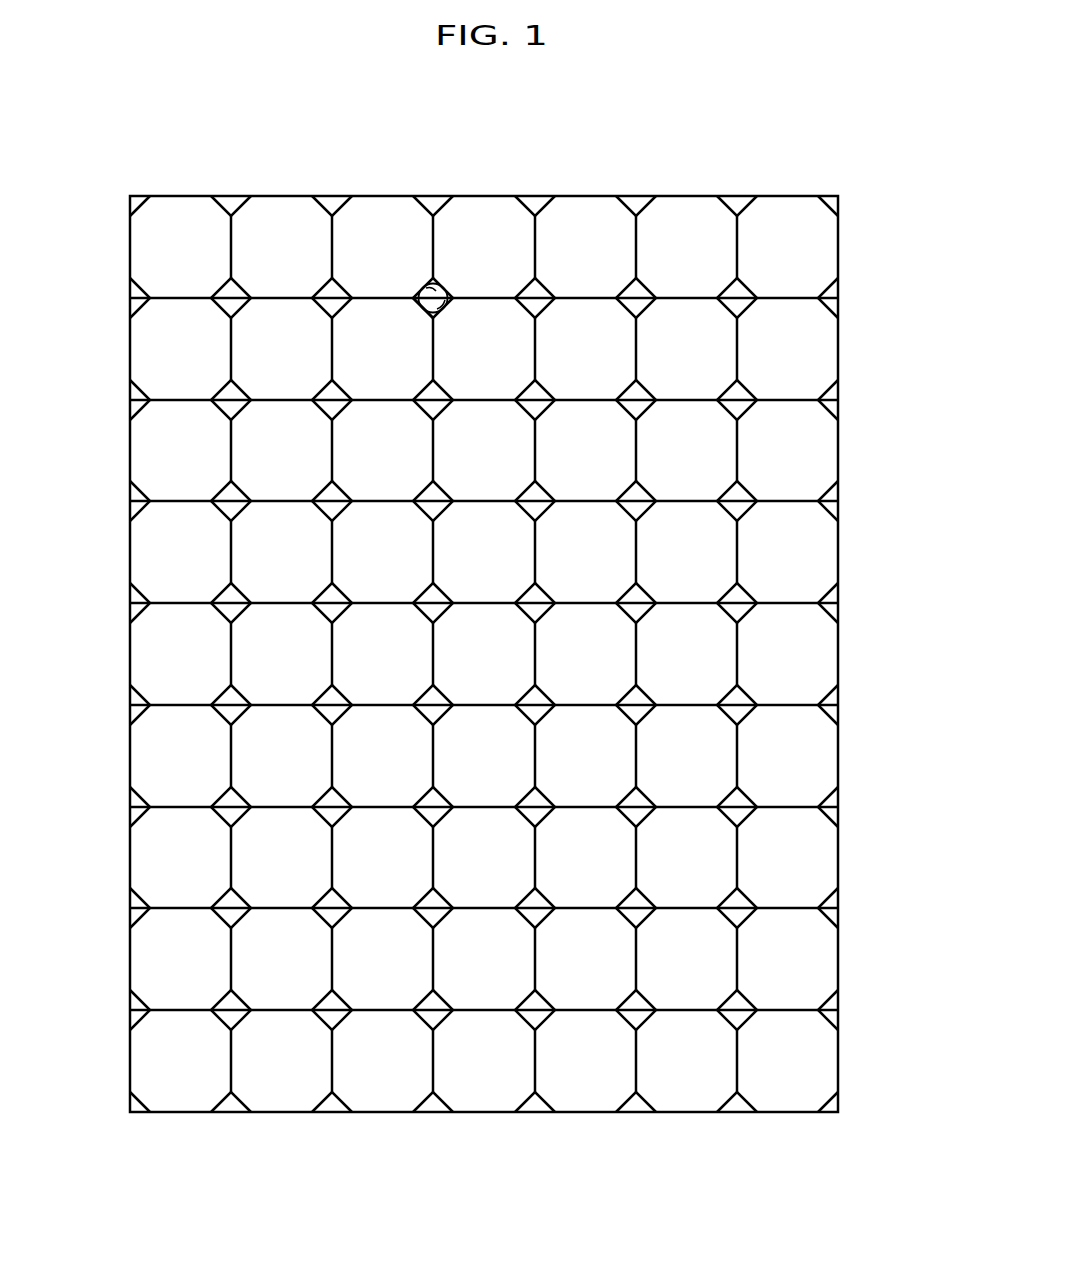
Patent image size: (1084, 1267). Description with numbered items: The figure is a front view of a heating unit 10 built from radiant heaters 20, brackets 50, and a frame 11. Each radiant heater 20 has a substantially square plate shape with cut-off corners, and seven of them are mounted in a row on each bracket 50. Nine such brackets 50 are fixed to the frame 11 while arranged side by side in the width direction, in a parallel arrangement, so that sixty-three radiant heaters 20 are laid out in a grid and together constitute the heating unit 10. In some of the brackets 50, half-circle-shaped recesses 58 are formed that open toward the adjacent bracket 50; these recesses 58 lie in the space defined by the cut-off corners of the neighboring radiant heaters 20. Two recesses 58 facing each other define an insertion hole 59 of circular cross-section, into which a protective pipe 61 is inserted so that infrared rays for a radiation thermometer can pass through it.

The heating unit 10 is at (493, 635).
The frame 11 is at (117, 1098).
The radiant heater 20 is at (186, 1092).
The bracket 50 is at (855, 247).
The recess 58 is at (446, 289).
The insertion hole 59 is at (422, 290).
The protective pipe 61 is at (421, 310).